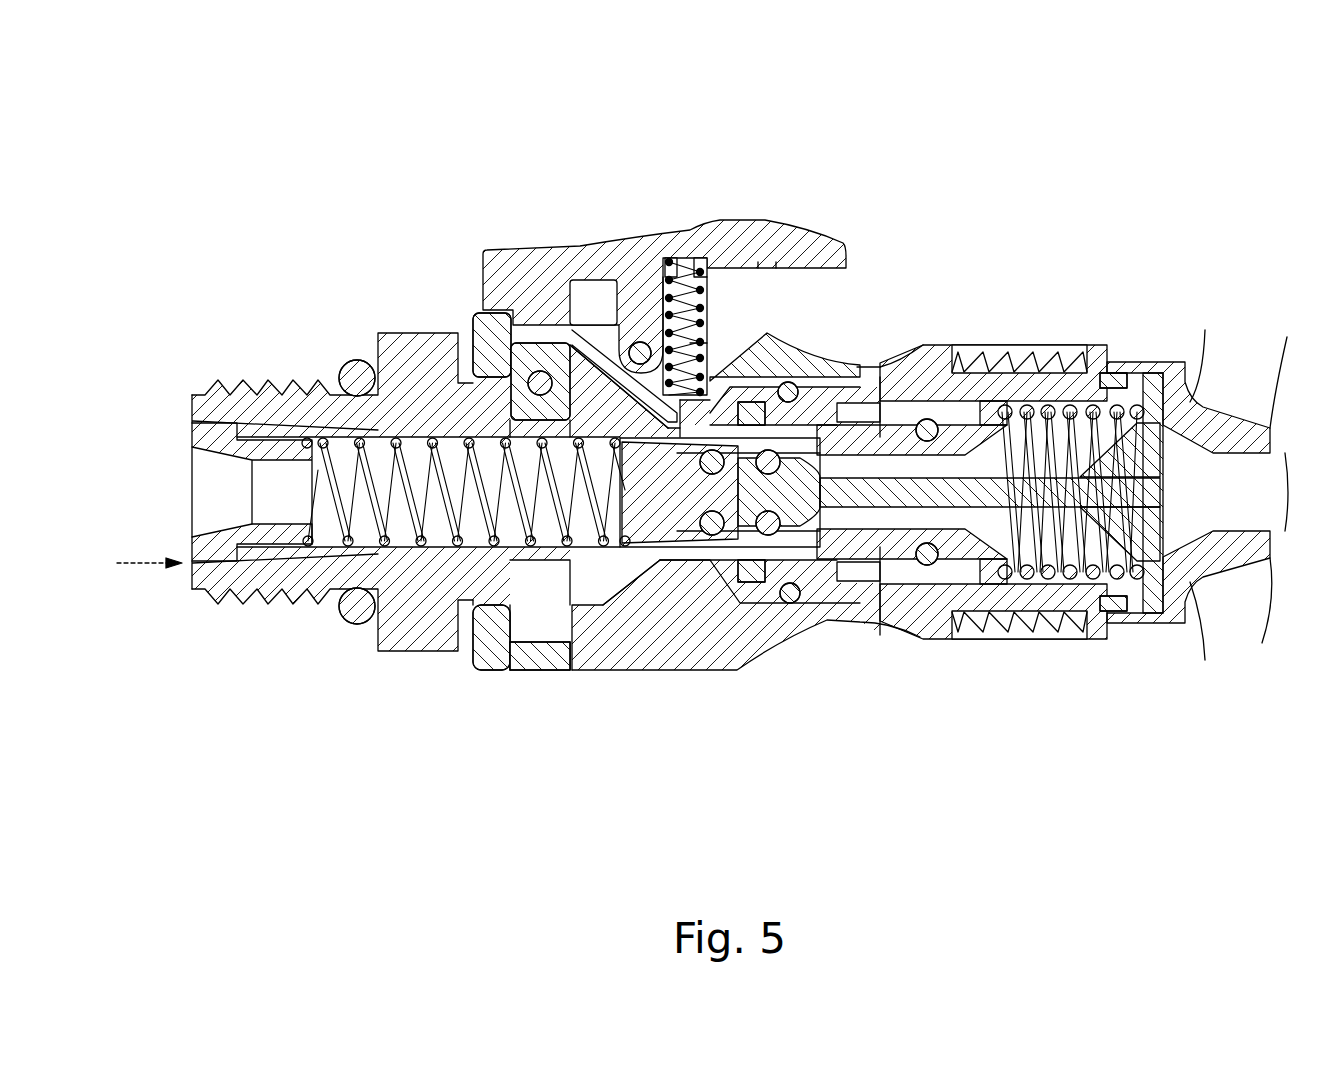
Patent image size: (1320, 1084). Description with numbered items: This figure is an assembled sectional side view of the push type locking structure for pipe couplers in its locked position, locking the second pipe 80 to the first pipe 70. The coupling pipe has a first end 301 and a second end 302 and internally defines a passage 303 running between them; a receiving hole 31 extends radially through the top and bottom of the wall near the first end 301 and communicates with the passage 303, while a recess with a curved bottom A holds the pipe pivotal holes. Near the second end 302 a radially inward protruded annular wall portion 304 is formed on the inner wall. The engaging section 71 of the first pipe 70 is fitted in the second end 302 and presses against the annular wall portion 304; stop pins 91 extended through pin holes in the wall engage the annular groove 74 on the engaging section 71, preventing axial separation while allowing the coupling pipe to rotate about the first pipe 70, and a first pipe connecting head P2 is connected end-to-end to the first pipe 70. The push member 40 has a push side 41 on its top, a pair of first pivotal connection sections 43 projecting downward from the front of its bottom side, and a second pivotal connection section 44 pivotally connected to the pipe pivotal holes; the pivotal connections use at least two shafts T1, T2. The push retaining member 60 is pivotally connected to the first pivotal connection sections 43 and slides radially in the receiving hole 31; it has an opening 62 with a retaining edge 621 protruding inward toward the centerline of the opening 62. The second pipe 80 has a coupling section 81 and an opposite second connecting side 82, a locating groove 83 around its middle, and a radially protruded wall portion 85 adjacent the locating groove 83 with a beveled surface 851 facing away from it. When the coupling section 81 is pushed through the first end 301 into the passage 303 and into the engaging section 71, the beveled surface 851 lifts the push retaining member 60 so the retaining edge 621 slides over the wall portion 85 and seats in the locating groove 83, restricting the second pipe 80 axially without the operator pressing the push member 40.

The push member 40 is at (664, 231).
The first pivotal connection sections 43 is at (553, 310).
The second pivotal connection section 44 is at (638, 342).
The push side 41 is at (699, 262).
The shaft T2 is at (775, 240).
The shaft T1 is at (530, 372).
The push retaining member 60 is at (480, 335).
The retaining edge 621 is at (505, 412).
The curved bottom A is at (690, 343).
The coupling section 81 is at (890, 400).
The annular groove 74 is at (843, 367).
The first pipe connecting head P2 is at (1190, 390).
The second pipe 80 is at (388, 632).
The second connecting side 82 is at (466, 492).
The first end 301 is at (490, 650).
The locating groove 83 is at (500, 650).
The opening 62 is at (542, 648).
The radially protruded wall portion 85 is at (612, 582).
The beveled surface 851 is at (643, 590).
The passage 303 is at (693, 567).
The radially inward protruded annular wall portion 304 is at (715, 565).
The second end 302 is at (772, 640).
The stop pin 91 is at (796, 603).
The engaging section 71 is at (837, 585).
The first pipe 70 is at (918, 605).
The receiving hole 31 is at (990, 492).